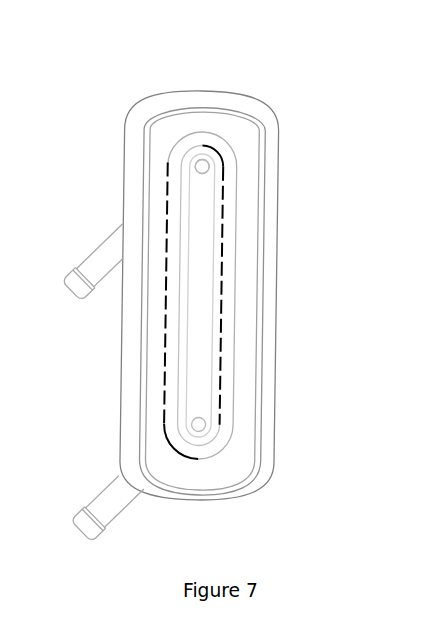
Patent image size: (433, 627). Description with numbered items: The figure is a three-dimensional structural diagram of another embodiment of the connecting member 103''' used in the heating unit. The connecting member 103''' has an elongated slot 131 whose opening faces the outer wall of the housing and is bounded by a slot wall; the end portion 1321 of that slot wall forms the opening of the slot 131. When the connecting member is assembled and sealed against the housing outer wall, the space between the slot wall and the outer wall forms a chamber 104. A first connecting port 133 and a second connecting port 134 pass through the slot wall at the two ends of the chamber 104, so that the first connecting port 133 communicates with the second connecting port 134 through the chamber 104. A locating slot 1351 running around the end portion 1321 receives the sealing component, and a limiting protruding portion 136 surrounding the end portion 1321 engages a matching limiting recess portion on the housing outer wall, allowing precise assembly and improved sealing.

The connecting member 103''' is at (226, 281).
The limiting protruding portion 136 is at (153, 118).
The locating slot 1351 is at (225, 247).
The slot 131 is at (203, 197).
The chamber 104 is at (205, 336).
The end portion 1321 is at (203, 165).
The first connecting port 133 is at (202, 166).
The second connecting port 134 is at (197, 425).